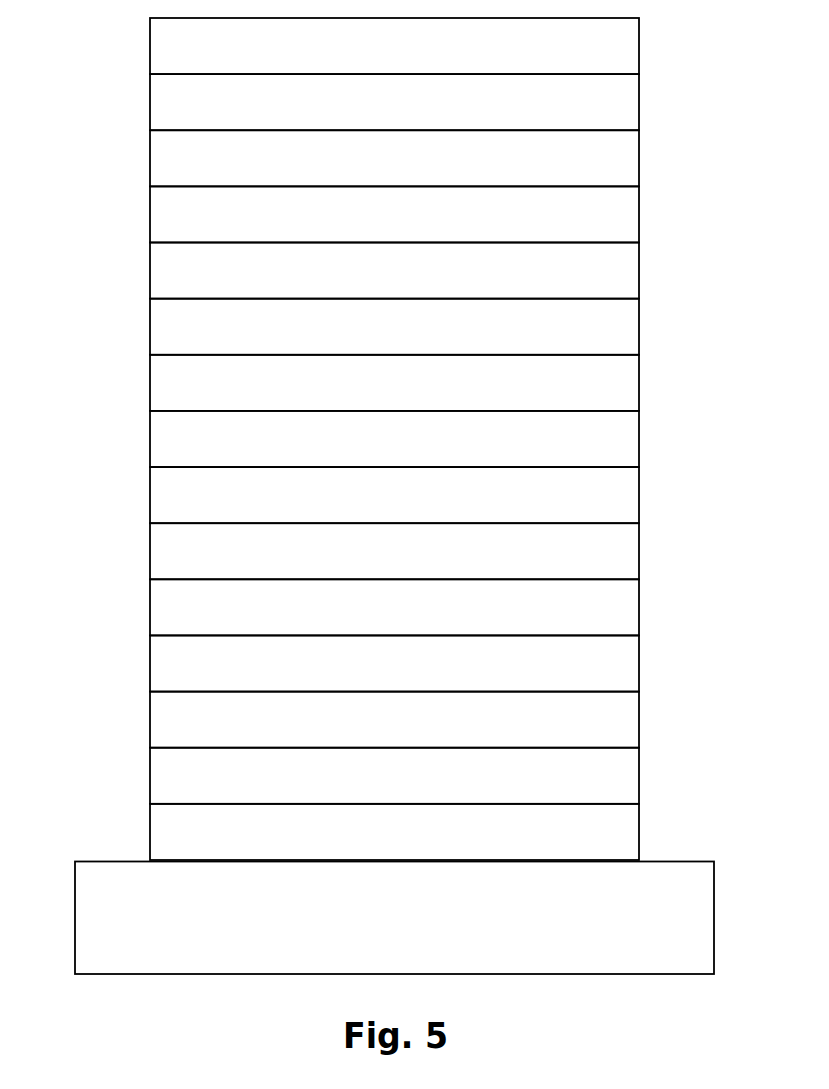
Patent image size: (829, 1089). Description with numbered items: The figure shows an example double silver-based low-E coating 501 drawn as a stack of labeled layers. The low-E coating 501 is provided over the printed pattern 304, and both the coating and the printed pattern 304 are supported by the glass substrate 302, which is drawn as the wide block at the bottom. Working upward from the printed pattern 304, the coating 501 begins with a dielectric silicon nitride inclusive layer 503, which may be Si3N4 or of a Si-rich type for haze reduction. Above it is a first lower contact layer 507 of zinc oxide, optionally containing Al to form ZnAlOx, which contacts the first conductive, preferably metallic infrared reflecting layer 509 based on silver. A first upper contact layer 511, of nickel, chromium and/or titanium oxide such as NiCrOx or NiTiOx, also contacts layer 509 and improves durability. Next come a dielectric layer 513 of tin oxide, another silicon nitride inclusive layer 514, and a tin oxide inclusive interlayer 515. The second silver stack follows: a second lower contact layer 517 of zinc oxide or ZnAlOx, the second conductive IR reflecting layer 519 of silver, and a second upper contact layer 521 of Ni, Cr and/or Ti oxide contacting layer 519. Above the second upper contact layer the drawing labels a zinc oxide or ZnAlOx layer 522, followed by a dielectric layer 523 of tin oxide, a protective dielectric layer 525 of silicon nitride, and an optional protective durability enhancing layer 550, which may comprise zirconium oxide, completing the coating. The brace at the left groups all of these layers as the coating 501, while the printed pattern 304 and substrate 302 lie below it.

The double silver-based low-E coating 501 is at (113, 17).
The optional protective durability enhancing protective layer 550 is at (639, 46).
The protective dielectric layer 525 is at (639, 102).
The dielectric layer 523 is at (639, 158).
The zinc oxide layer 522 is at (639, 214).
The second upper contact layer 521 is at (639, 271).
The second conductive and preferably metallic IR reflecting layer 519 is at (639, 327).
The second lower contact layer 517 is at (639, 383).
The tin oxide inclusive interlayer 515 is at (639, 439).
The silicon nitride inclusive layer 514 is at (639, 495).
The dielectric layer 513 is at (639, 551).
The first upper contact layer 511 is at (639, 607).
The first conductive and preferably metallic infrared reflecting layer 509 is at (639, 664).
The first lower contact layer 507 is at (639, 720).
The dielectric silicon nitride inclusive layer 503 is at (639, 776).
The printed pattern 304 is at (639, 834).
The substrate 302 is at (714, 917).